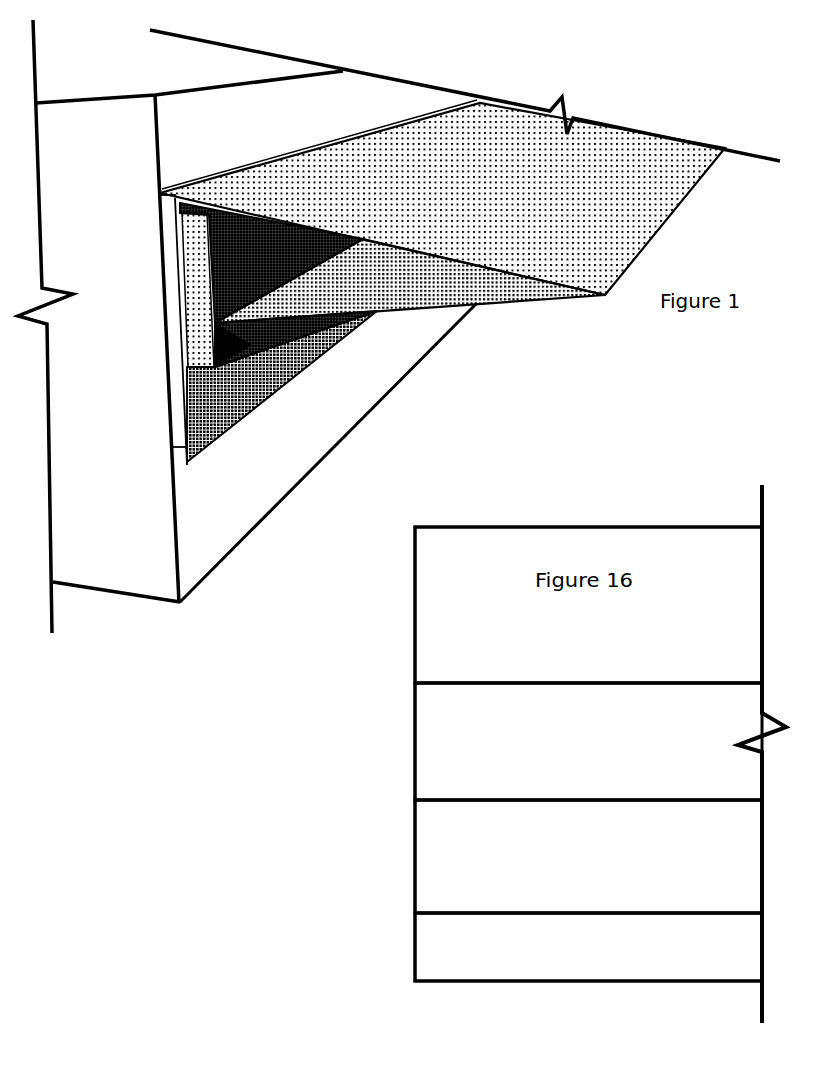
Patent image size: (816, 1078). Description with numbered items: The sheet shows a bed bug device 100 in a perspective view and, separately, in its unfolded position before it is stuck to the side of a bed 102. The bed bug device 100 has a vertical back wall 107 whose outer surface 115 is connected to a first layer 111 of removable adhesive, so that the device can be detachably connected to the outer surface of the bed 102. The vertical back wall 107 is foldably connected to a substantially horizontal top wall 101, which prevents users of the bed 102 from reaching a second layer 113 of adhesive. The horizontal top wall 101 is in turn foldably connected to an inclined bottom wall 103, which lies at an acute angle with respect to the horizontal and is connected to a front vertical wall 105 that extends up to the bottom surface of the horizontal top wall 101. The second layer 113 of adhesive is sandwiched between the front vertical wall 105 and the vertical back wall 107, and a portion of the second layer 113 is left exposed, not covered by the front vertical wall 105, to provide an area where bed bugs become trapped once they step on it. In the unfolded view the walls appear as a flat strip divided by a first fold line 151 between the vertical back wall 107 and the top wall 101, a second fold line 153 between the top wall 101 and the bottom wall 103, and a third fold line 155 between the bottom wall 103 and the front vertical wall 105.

In FIG. 1, the bed bug device 100 is at (399, 326).
In FIG. 1, the horizontal top wall 101 is at (368, 199).
In FIG. 16, the horizontal top wall 101 is at (472, 755).
In FIG. 1, the bed 102 is at (214, 508).
In FIG. 1, the inclined bottom wall 103 is at (411, 286).
In FIG. 16, the inclined bottom wall 103 is at (472, 853).
In FIG. 1, the front vertical wall 105 is at (262, 236).
In FIG. 16, the front vertical wall 105 is at (472, 950).
In FIG. 1, the vertical back wall 107 is at (304, 338).
In FIG. 16, the vertical back wall 107 is at (472, 658).
In FIG. 1, the first layer of adhesive 111 is at (170, 274).
In FIG. 1, the second layer of adhesive 113 is at (201, 354).
In FIG. 1, the outer surface 115 is at (178, 471).
In FIG. 16, the first fold line 151 is at (530, 686).
In FIG. 16, the second fold line 153 is at (530, 803).
In FIG. 16, the third fold line 155 is at (530, 915).